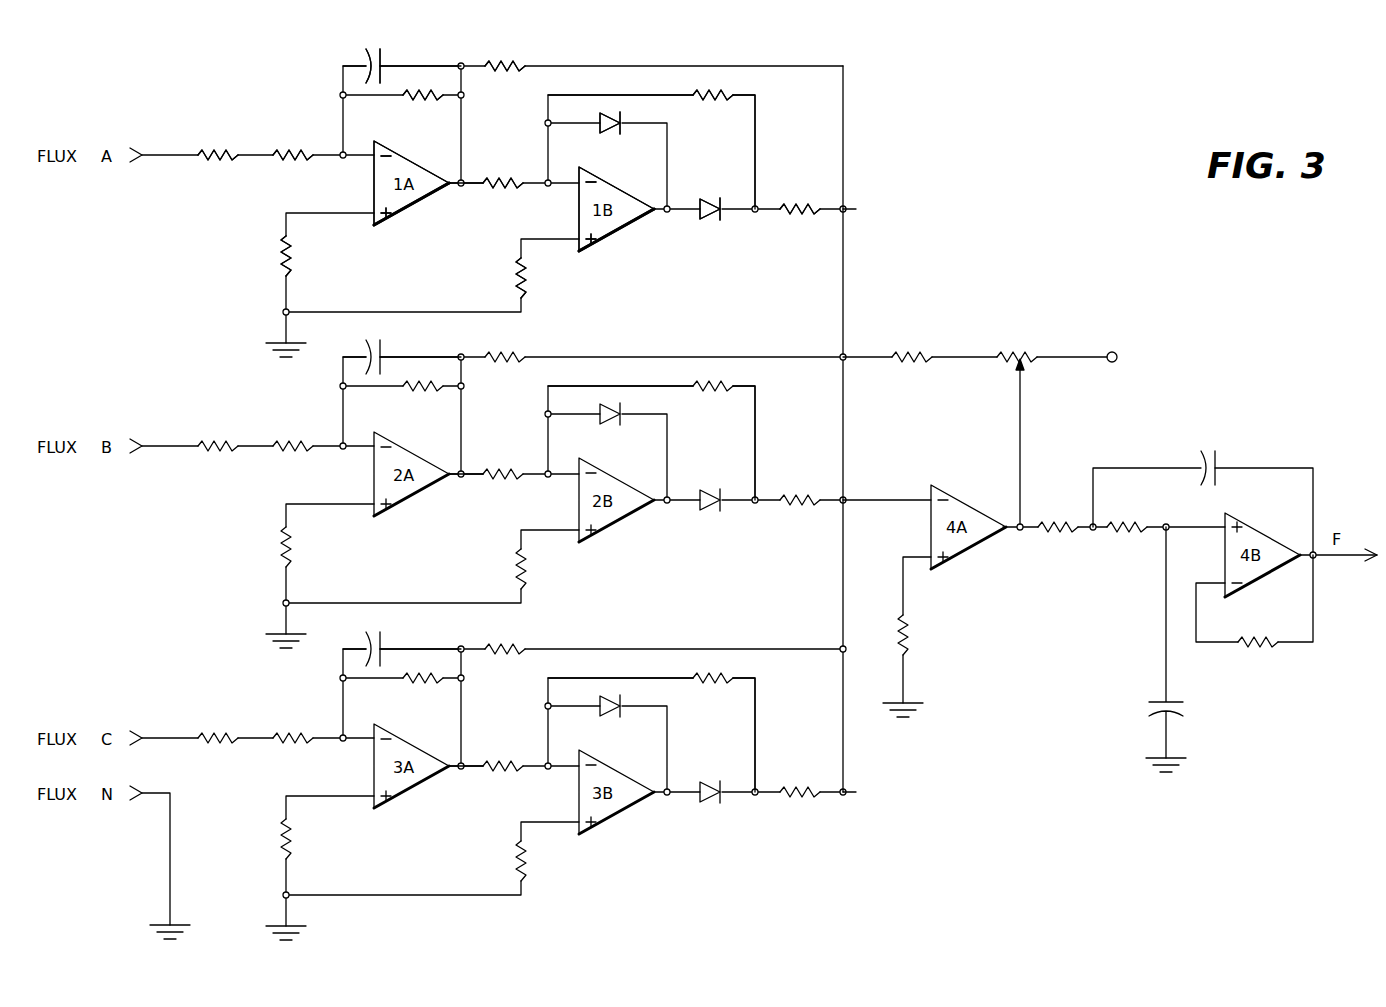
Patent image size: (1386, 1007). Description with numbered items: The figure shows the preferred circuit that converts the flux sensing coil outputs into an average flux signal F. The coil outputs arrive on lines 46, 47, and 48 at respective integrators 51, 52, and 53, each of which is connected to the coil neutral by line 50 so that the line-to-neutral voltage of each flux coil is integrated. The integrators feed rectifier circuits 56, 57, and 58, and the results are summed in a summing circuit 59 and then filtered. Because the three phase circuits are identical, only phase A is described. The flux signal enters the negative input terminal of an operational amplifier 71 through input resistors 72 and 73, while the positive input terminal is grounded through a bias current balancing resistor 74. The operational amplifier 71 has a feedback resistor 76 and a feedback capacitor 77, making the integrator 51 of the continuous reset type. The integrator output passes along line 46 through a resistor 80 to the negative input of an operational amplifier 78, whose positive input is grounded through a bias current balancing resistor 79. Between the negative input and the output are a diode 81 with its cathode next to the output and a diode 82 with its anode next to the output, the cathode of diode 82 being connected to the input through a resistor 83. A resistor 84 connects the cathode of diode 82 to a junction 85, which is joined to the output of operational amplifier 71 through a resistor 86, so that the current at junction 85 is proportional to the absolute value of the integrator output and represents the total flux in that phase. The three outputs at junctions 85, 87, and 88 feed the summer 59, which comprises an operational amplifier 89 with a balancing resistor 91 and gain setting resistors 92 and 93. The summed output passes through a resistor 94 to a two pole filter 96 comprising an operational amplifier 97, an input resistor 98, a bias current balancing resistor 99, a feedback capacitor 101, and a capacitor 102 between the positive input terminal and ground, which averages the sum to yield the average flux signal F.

The line 46 is at (474, 180).
The line 47 is at (472, 473).
The line 48 is at (480, 765).
The line 50 is at (170, 833).
The integrator 51 is at (421, 57).
The integrator 52 is at (421, 343).
The integrator 53 is at (434, 636).
The rectifier circuit 56 is at (801, 94).
The rectifier circuit 57 is at (809, 399).
The rectifier circuit 58 is at (813, 686).
The summing circuit 59 is at (963, 433).
The operational amplifier 71 is at (413, 208).
The input resistor 72 is at (210, 151).
The input resistor 73 is at (298, 152).
The bias current balancing resistor 74 is at (290, 262).
The feedback resistor 76 is at (433, 100).
The feedback capacitor 77 is at (366, 56).
The operational amplifier 78 is at (625, 228).
The bias current balancing resistor 79 is at (528, 278).
The resistor 80 is at (505, 188).
The diode 81 is at (612, 133).
The diode 82 is at (705, 222).
The resistor 83 is at (713, 100).
The resistor 84 is at (800, 200).
The junction 85 is at (856, 209).
The resistor 86 is at (527, 64).
The junction 87 is at (850, 499).
The junction 88 is at (856, 792).
The operational amplifier 89 is at (980, 545).
The balancing resistor 91 is at (910, 642).
The gain setting resistor 92 is at (914, 345).
The gain setting resistor 93 is at (1020, 346).
The resistor 94 is at (1056, 520).
The two pole filter 96 is at (1185, 441).
The operational amplifier 97 is at (1271, 575).
The input resistor 98 is at (1122, 535).
The bias current balancing resistor 99 is at (1262, 650).
The feedback capacitor 101 is at (1216, 460).
The capacitor 102 is at (1157, 701).